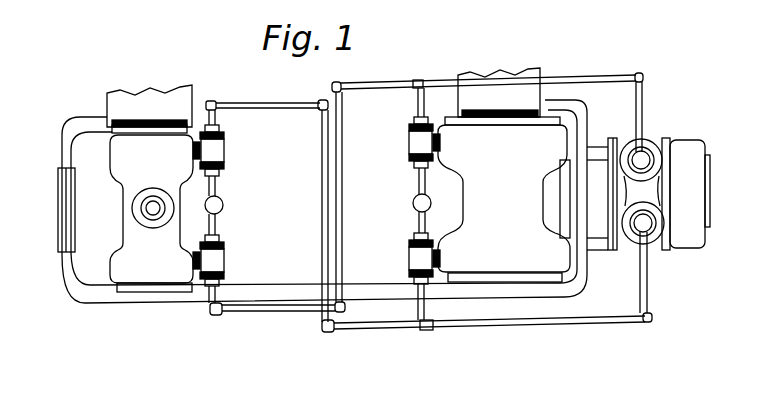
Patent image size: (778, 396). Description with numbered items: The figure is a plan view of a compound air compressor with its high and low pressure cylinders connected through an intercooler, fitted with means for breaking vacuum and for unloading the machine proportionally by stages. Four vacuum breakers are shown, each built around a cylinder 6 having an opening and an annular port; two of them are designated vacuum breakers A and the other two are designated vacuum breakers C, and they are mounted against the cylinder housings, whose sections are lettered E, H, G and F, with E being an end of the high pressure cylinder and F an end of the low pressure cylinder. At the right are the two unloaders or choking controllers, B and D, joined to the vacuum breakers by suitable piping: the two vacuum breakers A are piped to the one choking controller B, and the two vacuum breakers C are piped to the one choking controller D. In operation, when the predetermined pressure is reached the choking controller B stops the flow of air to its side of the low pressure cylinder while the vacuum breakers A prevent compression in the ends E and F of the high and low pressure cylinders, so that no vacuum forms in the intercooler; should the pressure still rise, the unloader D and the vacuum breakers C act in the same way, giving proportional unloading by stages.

The cylinder 6 is at (316, 201).
The vacuum breakers A is at (225, 153).
The vacuum breakers C is at (227, 263).
The end of high pressure cylinder E is at (150, 164).
The lower housing section of first cylinder H is at (151, 267).
The upper housing section of second cylinder G is at (504, 153).
The end of low pressure cylinder F is at (504, 251).
The choking controller D is at (645, 157).
The choking controller B is at (641, 234).